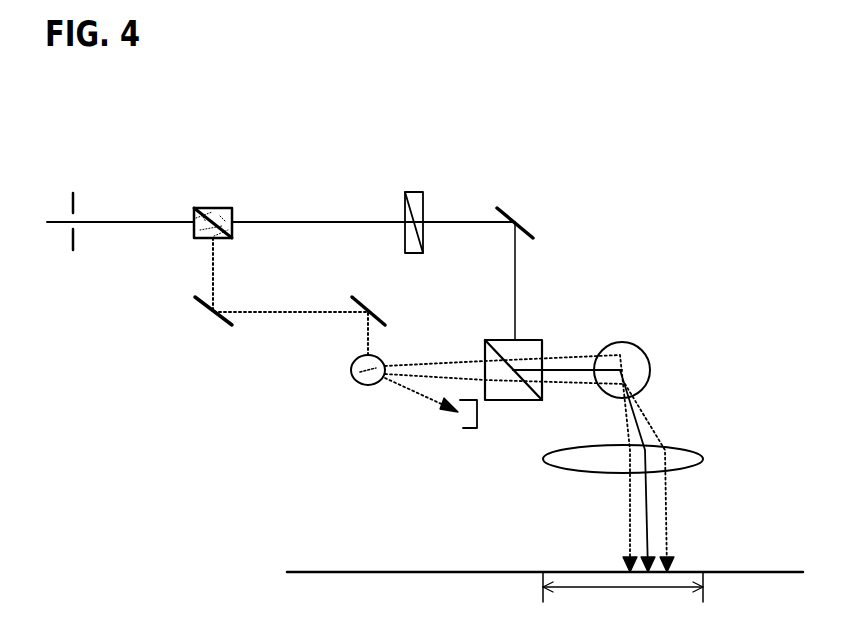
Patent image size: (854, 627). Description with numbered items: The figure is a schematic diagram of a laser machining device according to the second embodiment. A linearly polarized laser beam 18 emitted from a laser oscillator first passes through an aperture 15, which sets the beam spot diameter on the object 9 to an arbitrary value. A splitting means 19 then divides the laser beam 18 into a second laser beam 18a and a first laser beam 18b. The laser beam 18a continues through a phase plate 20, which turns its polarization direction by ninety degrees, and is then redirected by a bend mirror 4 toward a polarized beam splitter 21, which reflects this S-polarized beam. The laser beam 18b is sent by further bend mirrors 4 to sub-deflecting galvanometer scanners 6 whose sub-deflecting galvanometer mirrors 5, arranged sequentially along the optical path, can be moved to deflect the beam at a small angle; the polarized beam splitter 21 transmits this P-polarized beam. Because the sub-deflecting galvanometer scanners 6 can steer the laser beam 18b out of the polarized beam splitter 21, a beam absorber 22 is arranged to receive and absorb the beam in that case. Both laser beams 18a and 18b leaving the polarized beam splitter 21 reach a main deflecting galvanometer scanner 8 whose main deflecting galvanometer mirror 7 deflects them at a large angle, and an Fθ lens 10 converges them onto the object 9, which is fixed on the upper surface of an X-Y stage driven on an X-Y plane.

The bend mirror 4 is at (202, 306).
The sub-deflecting galvanometer mirror 5 is at (352, 378).
The sub-deflecting galvanometer scanner 6 is at (366, 386).
The main deflecting galvanometer mirror 7 is at (645, 350).
The main deflecting galvanometer scanner 8 is at (650, 370).
The object 9 is at (485, 572).
The Fθ lens 10 is at (683, 450).
The aperture 15 is at (73, 252).
The laser beam 18 is at (108, 222).
The second laser beam 18a is at (268, 222).
The first laser beam 18b is at (292, 312).
The splitting means 19 is at (232, 210).
The phase plate 20 is at (418, 192).
The polarized beam splitter 21 is at (540, 340).
The beam absorber 22 is at (465, 430).